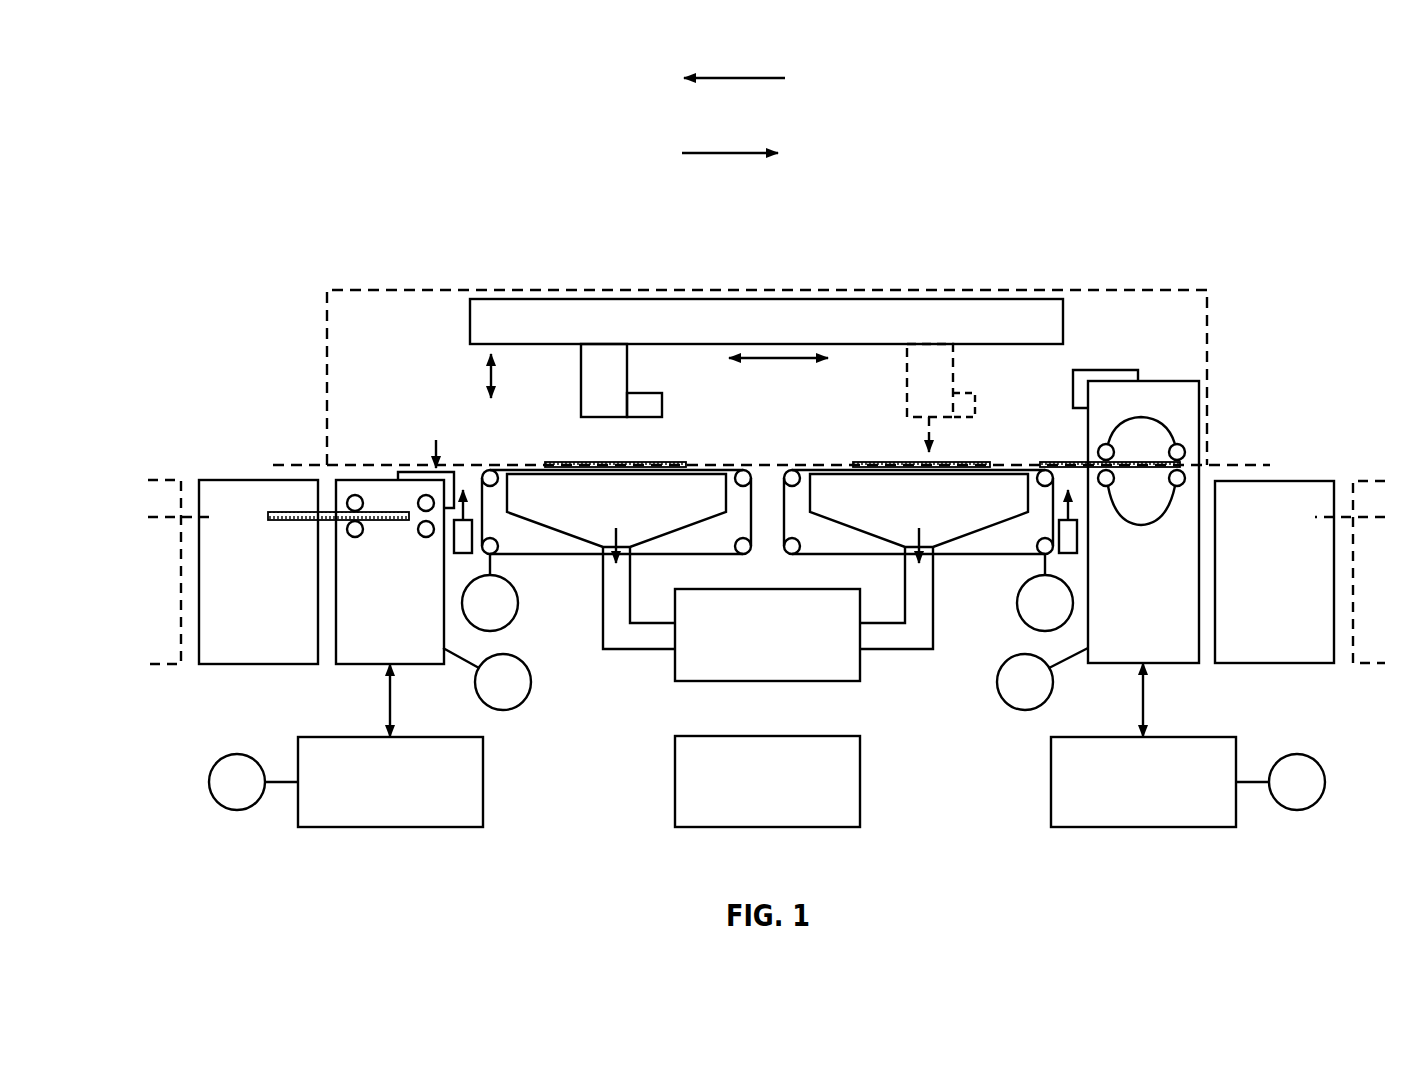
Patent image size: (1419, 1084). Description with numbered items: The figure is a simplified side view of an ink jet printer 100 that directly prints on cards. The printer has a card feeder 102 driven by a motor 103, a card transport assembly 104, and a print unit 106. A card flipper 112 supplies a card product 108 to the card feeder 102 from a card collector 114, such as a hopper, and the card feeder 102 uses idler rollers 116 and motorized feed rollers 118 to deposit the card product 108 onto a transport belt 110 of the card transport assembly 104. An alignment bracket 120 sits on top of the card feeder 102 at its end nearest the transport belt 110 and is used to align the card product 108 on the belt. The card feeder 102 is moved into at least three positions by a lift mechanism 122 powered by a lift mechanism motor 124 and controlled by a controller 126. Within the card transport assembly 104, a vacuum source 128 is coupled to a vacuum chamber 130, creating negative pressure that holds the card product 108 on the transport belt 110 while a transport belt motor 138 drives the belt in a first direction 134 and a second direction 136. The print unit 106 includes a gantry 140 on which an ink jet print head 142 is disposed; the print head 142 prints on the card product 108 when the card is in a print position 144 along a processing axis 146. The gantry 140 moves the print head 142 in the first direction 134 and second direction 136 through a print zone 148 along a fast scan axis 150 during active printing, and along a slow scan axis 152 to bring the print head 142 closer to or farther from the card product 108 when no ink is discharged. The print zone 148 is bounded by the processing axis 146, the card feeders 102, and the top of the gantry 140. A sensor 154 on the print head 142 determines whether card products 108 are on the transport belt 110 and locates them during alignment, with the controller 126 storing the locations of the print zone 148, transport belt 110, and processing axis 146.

The ink jet printer 100 is at (272, 218).
The card feeder 102 is at (757, 559).
The motor 103 is at (765, 693).
The card transport assembly 104 is at (587, 781).
The print unit 106 is at (999, 251).
The card product 108 is at (862, 445).
The transport belt 110 is at (767, 496).
The card flipper 112 is at (764, 541).
The card collector 114 is at (766, 541).
The idler rollers 116 is at (1141, 413).
The motorized feed rollers 118 is at (1141, 523).
The alignment bracket 120 is at (770, 442).
The lift mechanism 122 is at (767, 802).
The lift mechanism motor 124 is at (723, 813).
The controller 126 is at (772, 802).
The vacuum source 128 is at (772, 656).
The vacuum chamber 130 is at (767, 561).
The first direction 134 is at (743, 98).
The second direction 136 is at (719, 173).
The transport belt motor 138 is at (767, 606).
The gantry 140 is at (784, 277).
The ink jet print head 142 is at (740, 345).
The print position 144 is at (762, 424).
The processing axis 146 is at (765, 430).
The print zone 148 is at (771, 358).
The fast scan axis 150 is at (779, 395).
The slow scan axis 152 is at (531, 382).
The sensor 154 is at (824, 378).